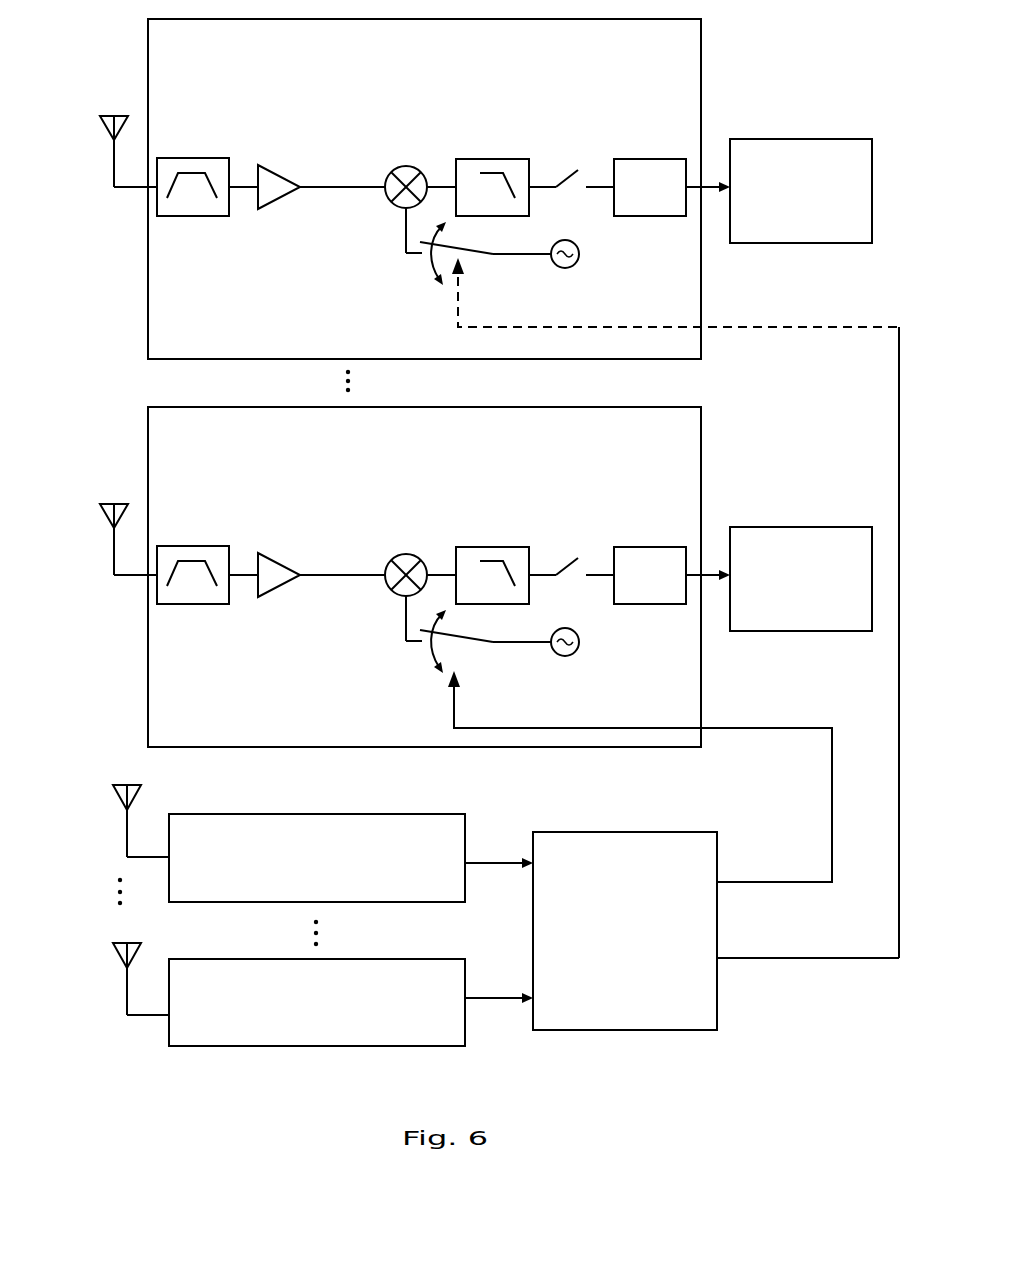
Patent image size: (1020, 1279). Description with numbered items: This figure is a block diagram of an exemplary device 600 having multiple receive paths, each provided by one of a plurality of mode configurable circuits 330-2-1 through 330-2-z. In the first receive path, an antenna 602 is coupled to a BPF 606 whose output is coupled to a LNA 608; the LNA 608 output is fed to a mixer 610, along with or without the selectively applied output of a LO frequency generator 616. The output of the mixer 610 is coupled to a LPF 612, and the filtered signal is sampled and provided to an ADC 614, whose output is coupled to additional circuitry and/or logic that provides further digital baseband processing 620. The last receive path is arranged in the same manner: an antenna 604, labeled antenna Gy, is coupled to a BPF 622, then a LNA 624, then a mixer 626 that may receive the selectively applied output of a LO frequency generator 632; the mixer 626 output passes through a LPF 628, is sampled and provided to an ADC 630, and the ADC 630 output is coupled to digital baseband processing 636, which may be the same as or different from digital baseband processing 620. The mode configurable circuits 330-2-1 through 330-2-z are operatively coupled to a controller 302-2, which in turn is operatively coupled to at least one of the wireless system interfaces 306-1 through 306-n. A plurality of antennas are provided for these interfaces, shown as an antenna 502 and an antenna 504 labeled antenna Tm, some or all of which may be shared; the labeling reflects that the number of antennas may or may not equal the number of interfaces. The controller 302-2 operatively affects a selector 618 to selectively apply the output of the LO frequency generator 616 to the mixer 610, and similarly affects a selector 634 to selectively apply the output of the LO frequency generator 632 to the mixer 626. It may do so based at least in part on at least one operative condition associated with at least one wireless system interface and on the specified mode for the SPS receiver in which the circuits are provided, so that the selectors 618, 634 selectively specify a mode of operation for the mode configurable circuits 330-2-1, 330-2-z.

The multi-mode wireless receiver system 600 is at (820, 1014).
The mode configurable circuit 330-2-1 is at (607, 56).
The mode configurable circuit 330-2-z is at (459, 577).
The antenna 602 is at (100, 143).
The antenna 604 is at (96, 527).
The BPF 606 is at (203, 133).
The LNA 608 is at (283, 203).
The mixer 610 is at (402, 133).
The LPF 612 is at (483, 132).
The ADC 614 is at (650, 140).
The LO frequency generator 616 is at (575, 282).
The selector 618 is at (415, 267).
The digital baseband processing 620 is at (800, 243).
The BPF 622 is at (219, 543).
The LNA 624 is at (303, 574).
The mixer 626 is at (379, 540).
The LPF 628 is at (470, 543).
The ADC 630 is at (631, 540).
The LO frequency generator 632 is at (582, 665).
The selector 634 is at (412, 653).
The digital baseband processing 636 is at (806, 601).
The antenna 502 is at (108, 803).
The antenna 504 is at (108, 965).
The wireless system interface 306-1 is at (347, 884).
The wireless system interface 306-n is at (347, 1029).
The controller 302-2 is at (655, 971).